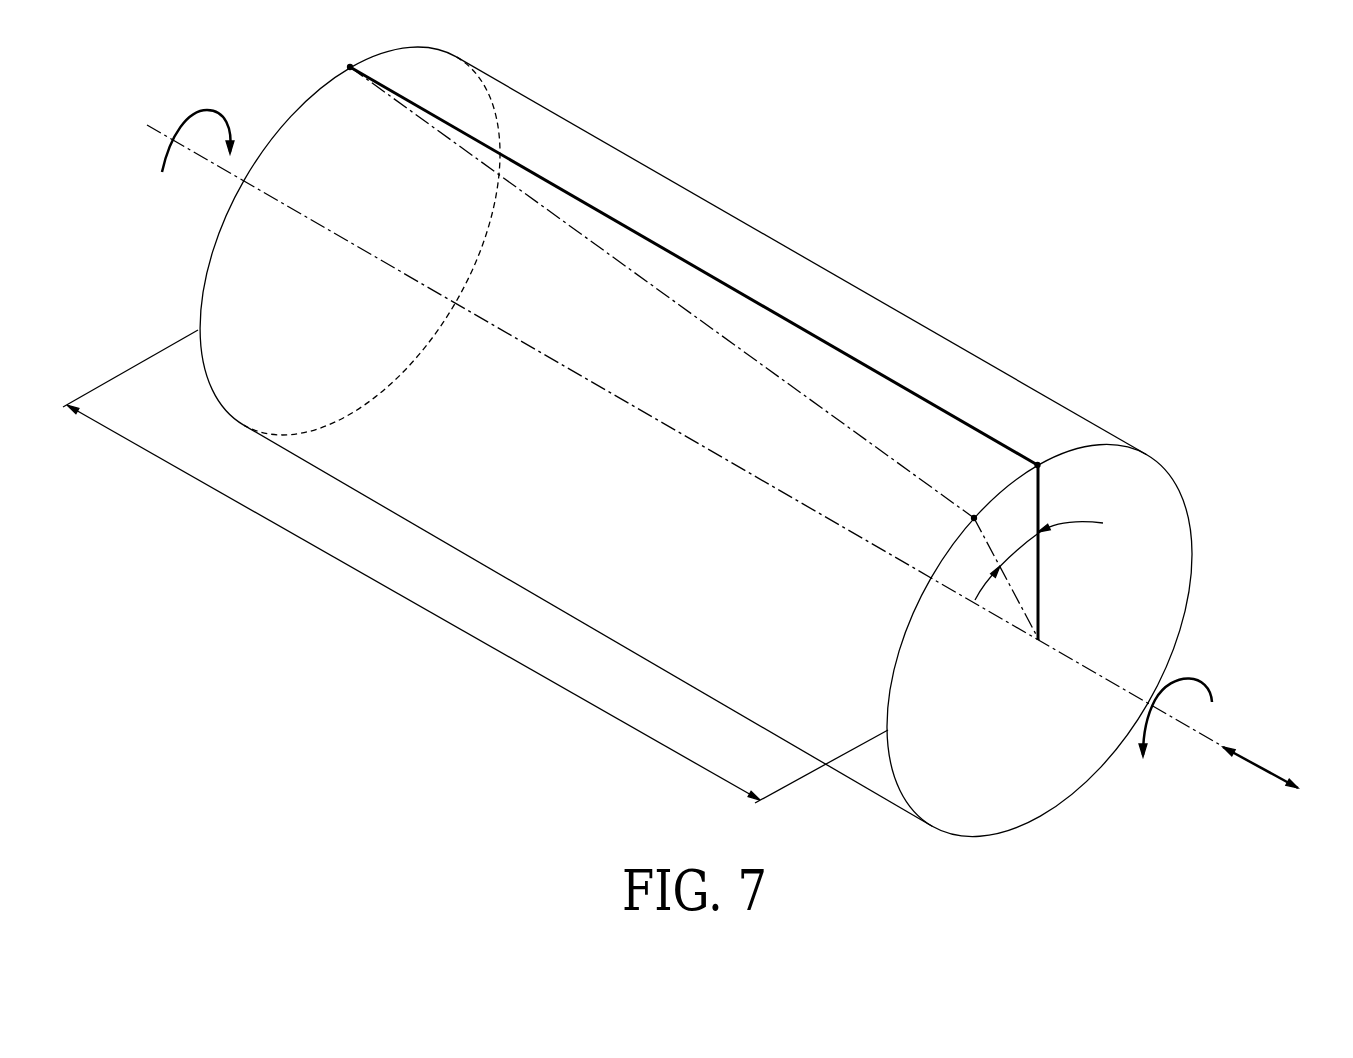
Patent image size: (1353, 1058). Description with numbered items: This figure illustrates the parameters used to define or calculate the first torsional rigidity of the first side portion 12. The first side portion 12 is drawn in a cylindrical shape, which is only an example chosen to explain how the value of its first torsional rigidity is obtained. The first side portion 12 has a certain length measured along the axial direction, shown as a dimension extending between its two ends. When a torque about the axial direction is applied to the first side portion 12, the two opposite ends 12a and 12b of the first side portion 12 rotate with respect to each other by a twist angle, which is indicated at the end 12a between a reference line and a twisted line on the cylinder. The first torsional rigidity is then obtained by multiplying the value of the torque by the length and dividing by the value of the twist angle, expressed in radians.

The first side portion 12 is at (1337, 60).
The end of the first side portion 12a is at (1002, 763).
The end of the first side portion 12b is at (250, 410).